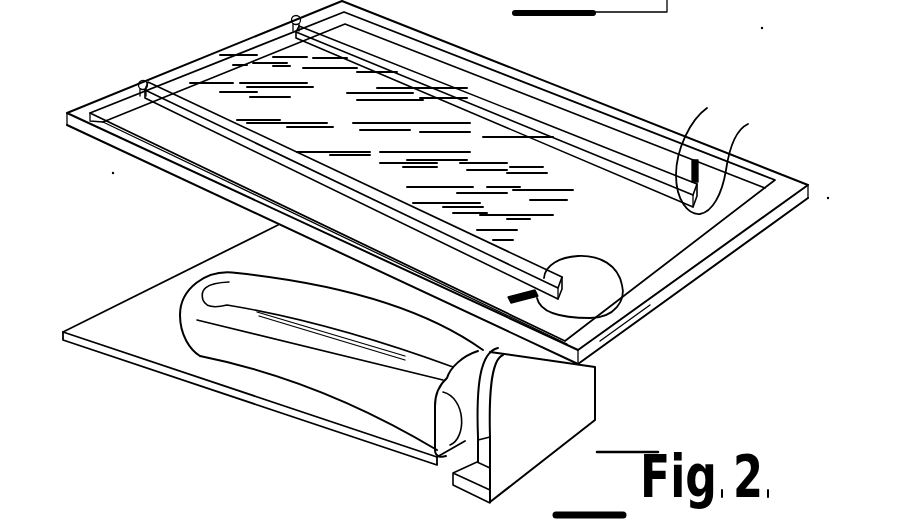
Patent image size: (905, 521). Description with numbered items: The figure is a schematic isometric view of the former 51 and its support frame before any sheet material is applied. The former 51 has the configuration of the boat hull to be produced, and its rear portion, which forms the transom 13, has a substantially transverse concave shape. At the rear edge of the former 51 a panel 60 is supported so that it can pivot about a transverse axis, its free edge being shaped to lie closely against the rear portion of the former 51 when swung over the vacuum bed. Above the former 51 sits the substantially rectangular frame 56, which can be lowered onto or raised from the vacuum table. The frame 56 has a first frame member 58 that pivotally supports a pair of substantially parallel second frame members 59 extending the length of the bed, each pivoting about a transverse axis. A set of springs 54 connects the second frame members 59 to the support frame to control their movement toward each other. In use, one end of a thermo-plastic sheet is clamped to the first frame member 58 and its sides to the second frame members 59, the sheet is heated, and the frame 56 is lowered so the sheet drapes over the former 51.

The transom 13 is at (440, 447).
The former 51 is at (262, 350).
The springs 54 is at (630, 328).
The frame 56 is at (596, 92).
The first frame member 58 is at (207, 56).
The second frame members 59 is at (625, 300).
The panel 60 is at (577, 390).